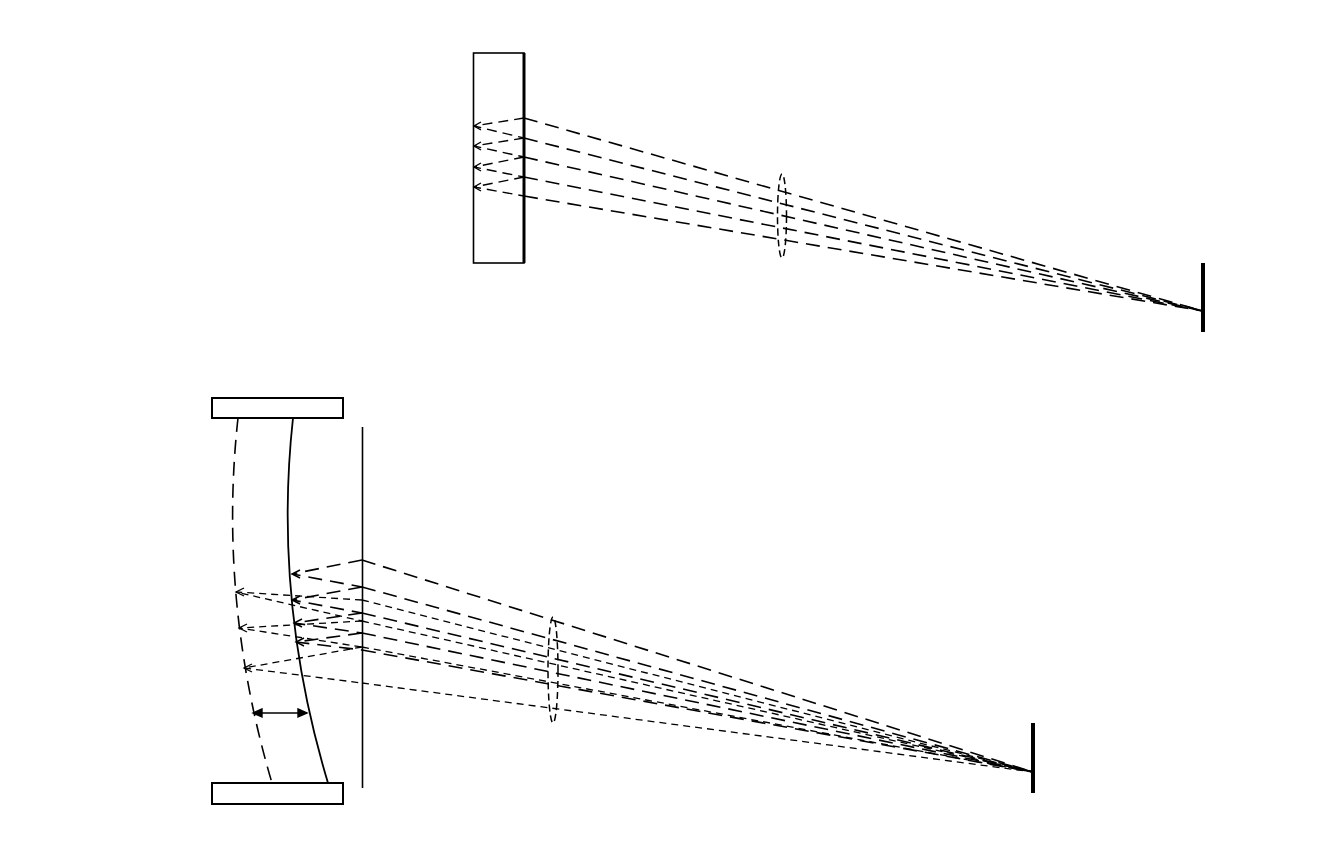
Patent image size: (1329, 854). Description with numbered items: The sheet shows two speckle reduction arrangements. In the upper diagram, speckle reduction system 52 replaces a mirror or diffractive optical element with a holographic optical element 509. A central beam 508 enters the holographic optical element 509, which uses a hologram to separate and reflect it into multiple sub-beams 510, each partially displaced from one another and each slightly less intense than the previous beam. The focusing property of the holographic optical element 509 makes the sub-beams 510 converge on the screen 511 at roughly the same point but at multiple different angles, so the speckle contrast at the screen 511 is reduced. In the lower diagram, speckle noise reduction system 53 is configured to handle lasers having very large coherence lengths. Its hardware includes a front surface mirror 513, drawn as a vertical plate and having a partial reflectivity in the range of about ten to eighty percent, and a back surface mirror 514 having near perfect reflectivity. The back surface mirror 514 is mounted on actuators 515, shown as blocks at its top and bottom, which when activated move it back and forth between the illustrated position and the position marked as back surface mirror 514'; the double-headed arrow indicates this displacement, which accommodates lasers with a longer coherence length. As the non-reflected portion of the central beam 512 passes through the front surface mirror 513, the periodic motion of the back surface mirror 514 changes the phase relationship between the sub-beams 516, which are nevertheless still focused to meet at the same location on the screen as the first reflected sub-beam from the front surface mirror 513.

In FIG. 5C, the speckle reduction system 52 is at (931, 102).
In FIG. 5C, the central beam 508 is at (533, 111).
In FIG. 5C, the holographic optical element 509 is at (473, 103).
In FIG. 5C, the sub-beams 510 is at (782, 176).
In FIG. 5C, the screen 511 is at (1206, 299).
In FIG. 5D, the screen 511 is at (1036, 759).
In FIG. 5D, the speckle noise reduction system 53 is at (761, 562).
In FIG. 5D, the central beam 512 is at (357, 550).
In FIG. 5D, the front surface mirror 513 is at (365, 728).
In FIG. 5D, the back surface mirror 514 is at (319, 600).
In FIG. 5D, the back surface mirror position 514' is at (233, 600).
In FIG. 5D, the actuators 515 is at (212, 404).
In FIG. 5D, the sub-beams 516 is at (552, 616).